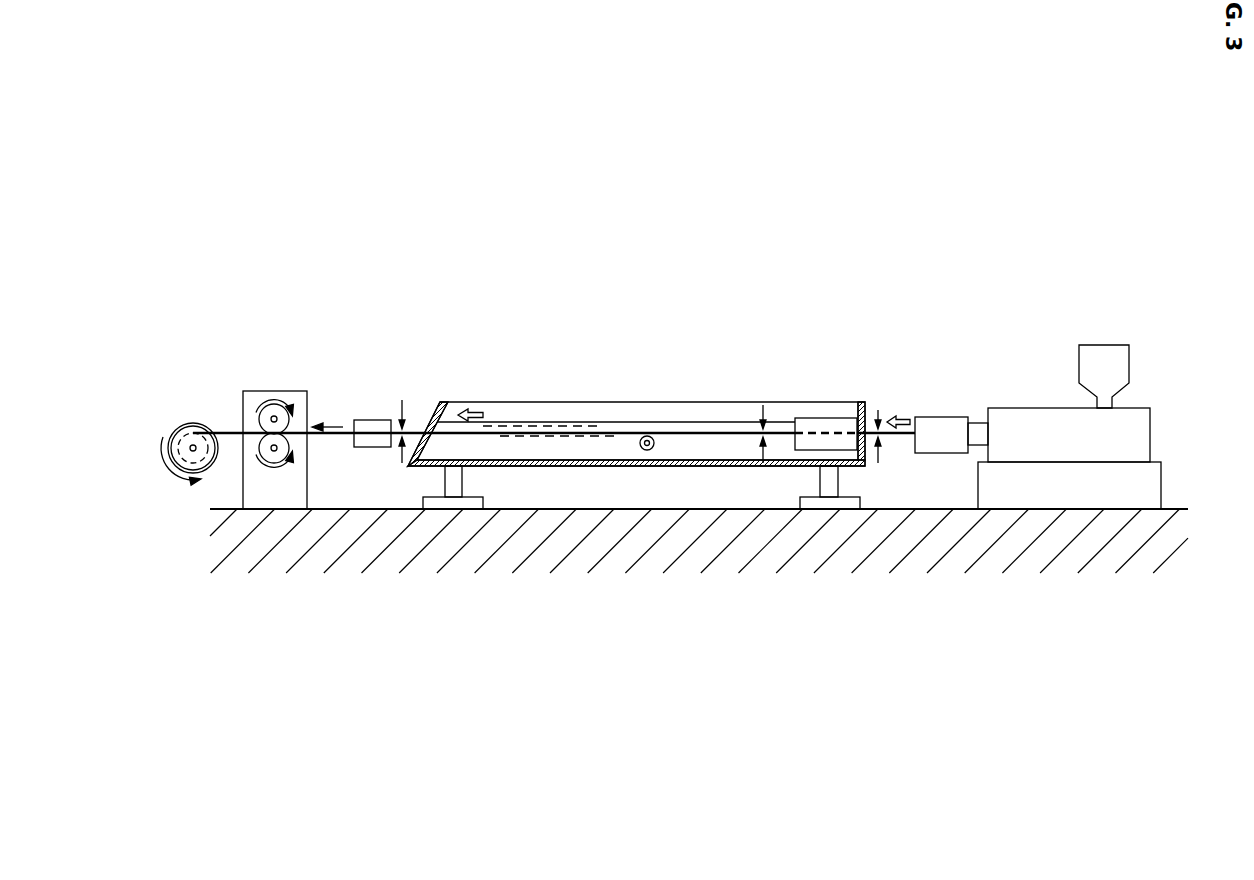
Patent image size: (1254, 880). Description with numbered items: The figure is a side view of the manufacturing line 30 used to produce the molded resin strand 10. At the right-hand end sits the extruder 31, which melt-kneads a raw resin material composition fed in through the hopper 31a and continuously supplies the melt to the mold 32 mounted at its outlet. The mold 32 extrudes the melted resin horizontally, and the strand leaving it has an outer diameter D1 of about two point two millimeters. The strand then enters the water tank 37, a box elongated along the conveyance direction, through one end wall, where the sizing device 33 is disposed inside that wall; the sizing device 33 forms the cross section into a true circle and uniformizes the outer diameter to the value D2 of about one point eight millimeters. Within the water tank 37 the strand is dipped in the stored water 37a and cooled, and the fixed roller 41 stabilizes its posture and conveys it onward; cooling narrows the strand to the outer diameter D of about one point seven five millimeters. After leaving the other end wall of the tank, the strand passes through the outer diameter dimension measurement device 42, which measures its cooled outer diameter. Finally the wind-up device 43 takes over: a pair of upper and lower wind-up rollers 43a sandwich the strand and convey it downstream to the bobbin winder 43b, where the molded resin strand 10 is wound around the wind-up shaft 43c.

The molded resin strand 10 is at (900, 436).
The manufacturing line 30 is at (1038, 391).
The extruder 31 is at (1017, 413).
The hopper 31a is at (1105, 355).
The mold 32 is at (938, 421).
The sizing device 33 is at (827, 418).
The water tank 37 is at (636, 429).
The water 37a is at (547, 424).
The fixed roller 41 is at (650, 450).
The outer diameter dimension measurement device 42 is at (375, 423).
The wind-up device 43 is at (262, 408).
The wind-up rollers 43a is at (288, 440).
The bobbin winder 43b is at (206, 416).
The wind-up shaft 43c is at (193, 445).
The outer diameter D is at (403, 402).
The outer diameter D1 is at (878, 410).
The outer diameter D2 is at (764, 405).